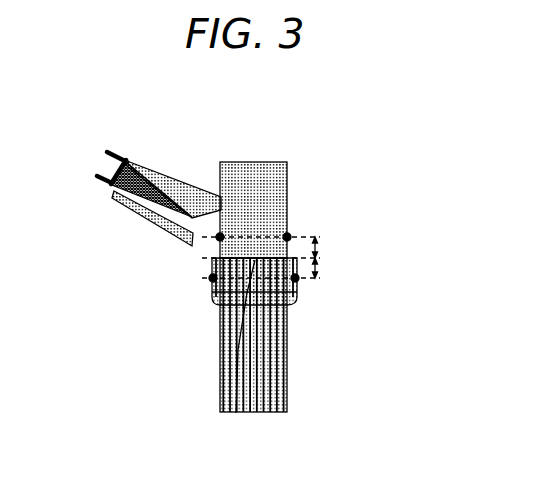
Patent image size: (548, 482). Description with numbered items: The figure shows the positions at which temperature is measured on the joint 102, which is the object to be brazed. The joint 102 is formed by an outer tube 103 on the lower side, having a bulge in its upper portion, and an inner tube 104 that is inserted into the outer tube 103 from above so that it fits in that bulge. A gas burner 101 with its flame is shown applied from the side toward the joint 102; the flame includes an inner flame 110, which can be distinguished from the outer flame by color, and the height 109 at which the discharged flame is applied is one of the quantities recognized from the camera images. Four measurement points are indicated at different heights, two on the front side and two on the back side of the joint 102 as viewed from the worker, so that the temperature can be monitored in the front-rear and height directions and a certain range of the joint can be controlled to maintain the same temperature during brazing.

The connector 101 is at (107, 152).
The joint 102 is at (236, 413).
The outer tube 103 is at (263, 378).
The inner tube 104 is at (288, 188).
The height at which the flame is applied 109 is at (137, 207).
The inner flame 110 is at (173, 235).